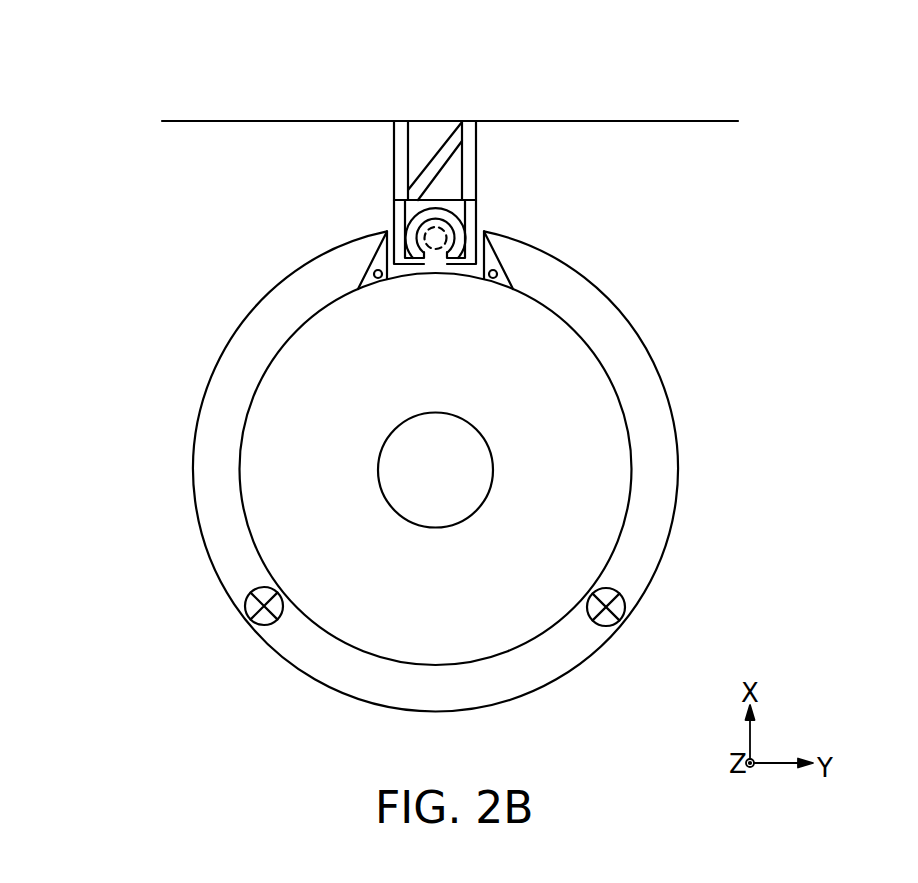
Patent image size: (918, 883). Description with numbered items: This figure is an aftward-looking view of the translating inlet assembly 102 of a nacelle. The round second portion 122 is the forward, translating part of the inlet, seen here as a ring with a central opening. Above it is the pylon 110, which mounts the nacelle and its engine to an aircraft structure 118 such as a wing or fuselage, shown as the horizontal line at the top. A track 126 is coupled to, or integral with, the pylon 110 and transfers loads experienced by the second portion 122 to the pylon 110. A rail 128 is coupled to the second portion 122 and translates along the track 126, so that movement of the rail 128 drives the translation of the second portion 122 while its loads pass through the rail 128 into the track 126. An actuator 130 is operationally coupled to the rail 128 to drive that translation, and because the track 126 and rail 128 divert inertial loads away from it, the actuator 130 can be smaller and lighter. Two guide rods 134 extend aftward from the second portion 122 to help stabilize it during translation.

The translating inlet assembly 102 is at (427, 470).
The pylon 110 is at (394, 140).
The aircraft structure 118 is at (653, 90).
The second portion 122 is at (653, 538).
The track 126 is at (404, 215).
The rail 128 is at (437, 266).
The actuator 130 is at (443, 227).
The guide rods 134 is at (272, 621).